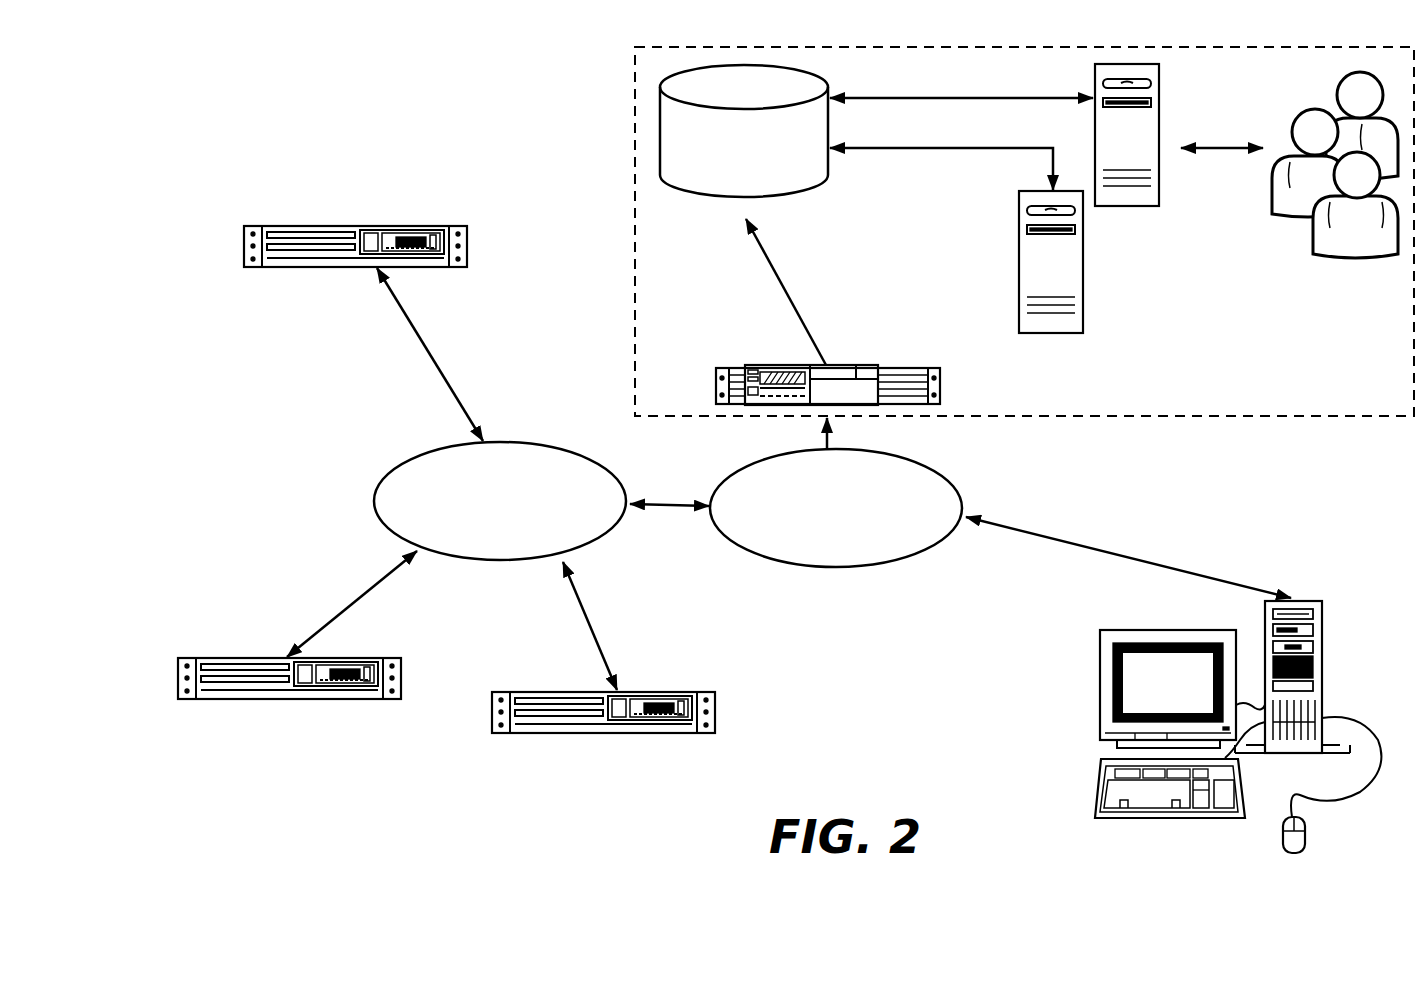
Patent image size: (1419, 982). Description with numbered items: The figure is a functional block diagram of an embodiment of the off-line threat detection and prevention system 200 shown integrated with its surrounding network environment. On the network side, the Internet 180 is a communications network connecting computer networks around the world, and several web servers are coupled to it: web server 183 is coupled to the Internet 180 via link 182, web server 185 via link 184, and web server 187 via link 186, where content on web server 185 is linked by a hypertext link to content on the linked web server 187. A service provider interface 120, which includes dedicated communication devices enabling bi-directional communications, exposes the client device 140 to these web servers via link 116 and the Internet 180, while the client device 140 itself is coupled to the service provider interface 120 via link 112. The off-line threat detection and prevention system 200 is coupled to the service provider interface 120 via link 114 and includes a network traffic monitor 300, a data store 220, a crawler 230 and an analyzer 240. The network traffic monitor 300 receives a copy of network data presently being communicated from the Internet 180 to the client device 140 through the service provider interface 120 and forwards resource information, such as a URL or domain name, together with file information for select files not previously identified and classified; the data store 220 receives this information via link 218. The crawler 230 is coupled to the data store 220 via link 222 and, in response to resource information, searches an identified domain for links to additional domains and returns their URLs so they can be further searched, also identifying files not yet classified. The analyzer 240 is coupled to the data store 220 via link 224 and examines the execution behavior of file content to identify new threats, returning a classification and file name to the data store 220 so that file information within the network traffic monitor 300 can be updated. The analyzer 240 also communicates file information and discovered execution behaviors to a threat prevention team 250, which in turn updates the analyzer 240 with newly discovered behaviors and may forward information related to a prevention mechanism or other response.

The off-line threat detection and prevention system 200 is at (1024, 231).
The data store 220 is at (744, 131).
The link 222 is at (962, 152).
The link 224 is at (1015, 100).
The analyzer 240 is at (1161, 95).
The crawler 230 is at (1085, 292).
The threat prevention team 250 is at (1355, 258).
The network traffic monitor 300 is at (870, 365).
The link 218 is at (795, 302).
The link 114 is at (842, 433).
The link 116 is at (668, 498).
The Internet 180 is at (500, 501).
The service provider interface 120 is at (836, 508).
The link 112 is at (1195, 575).
The client device 140 is at (1323, 668).
The web server 187 is at (470, 242).
The link 186 is at (436, 353).
The web server 185 is at (405, 678).
The link 184 is at (383, 582).
The web server 183 is at (682, 690).
The link 182 is at (597, 606).